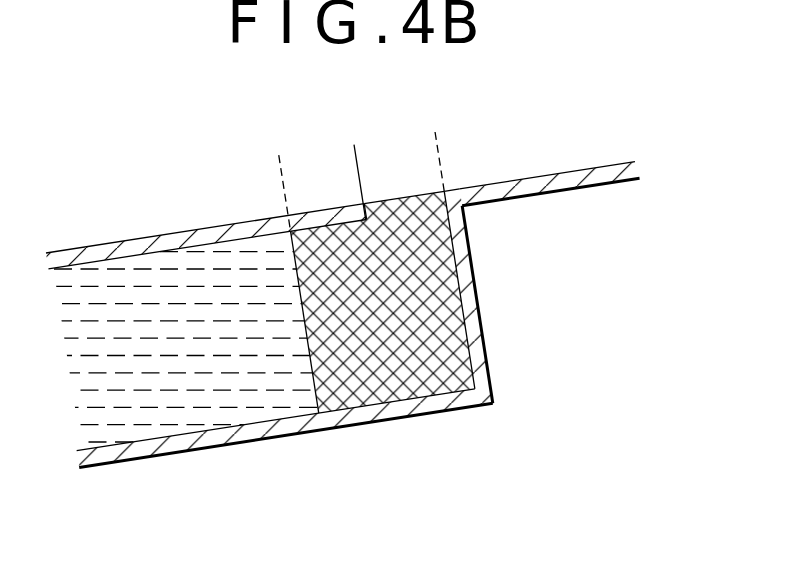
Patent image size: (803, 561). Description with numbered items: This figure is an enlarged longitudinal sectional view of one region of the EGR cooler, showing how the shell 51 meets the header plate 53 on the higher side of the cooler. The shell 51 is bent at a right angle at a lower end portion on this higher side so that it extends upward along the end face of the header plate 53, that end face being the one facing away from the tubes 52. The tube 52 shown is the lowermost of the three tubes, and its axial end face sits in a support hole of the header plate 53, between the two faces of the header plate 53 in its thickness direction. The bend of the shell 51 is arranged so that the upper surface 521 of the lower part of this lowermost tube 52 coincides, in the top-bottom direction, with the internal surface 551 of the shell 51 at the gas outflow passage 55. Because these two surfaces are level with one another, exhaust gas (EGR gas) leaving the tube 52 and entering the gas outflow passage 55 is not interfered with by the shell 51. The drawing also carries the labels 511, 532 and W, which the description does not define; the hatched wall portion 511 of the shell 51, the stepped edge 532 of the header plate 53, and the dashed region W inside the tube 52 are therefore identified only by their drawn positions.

The shell 51 is at (253, 434).
The side wall 511 is at (470, 317).
The tube 52 is at (201, 238).
The upper surface of lower part of tube 521 is at (117, 241).
The header plate 53 is at (412, 362).
The step portion of sealing member 532 is at (398, 198).
The gas outflow passage 55 is at (577, 188).
The internal surface of shell 551 is at (520, 181).
The wire harness W is at (138, 378).